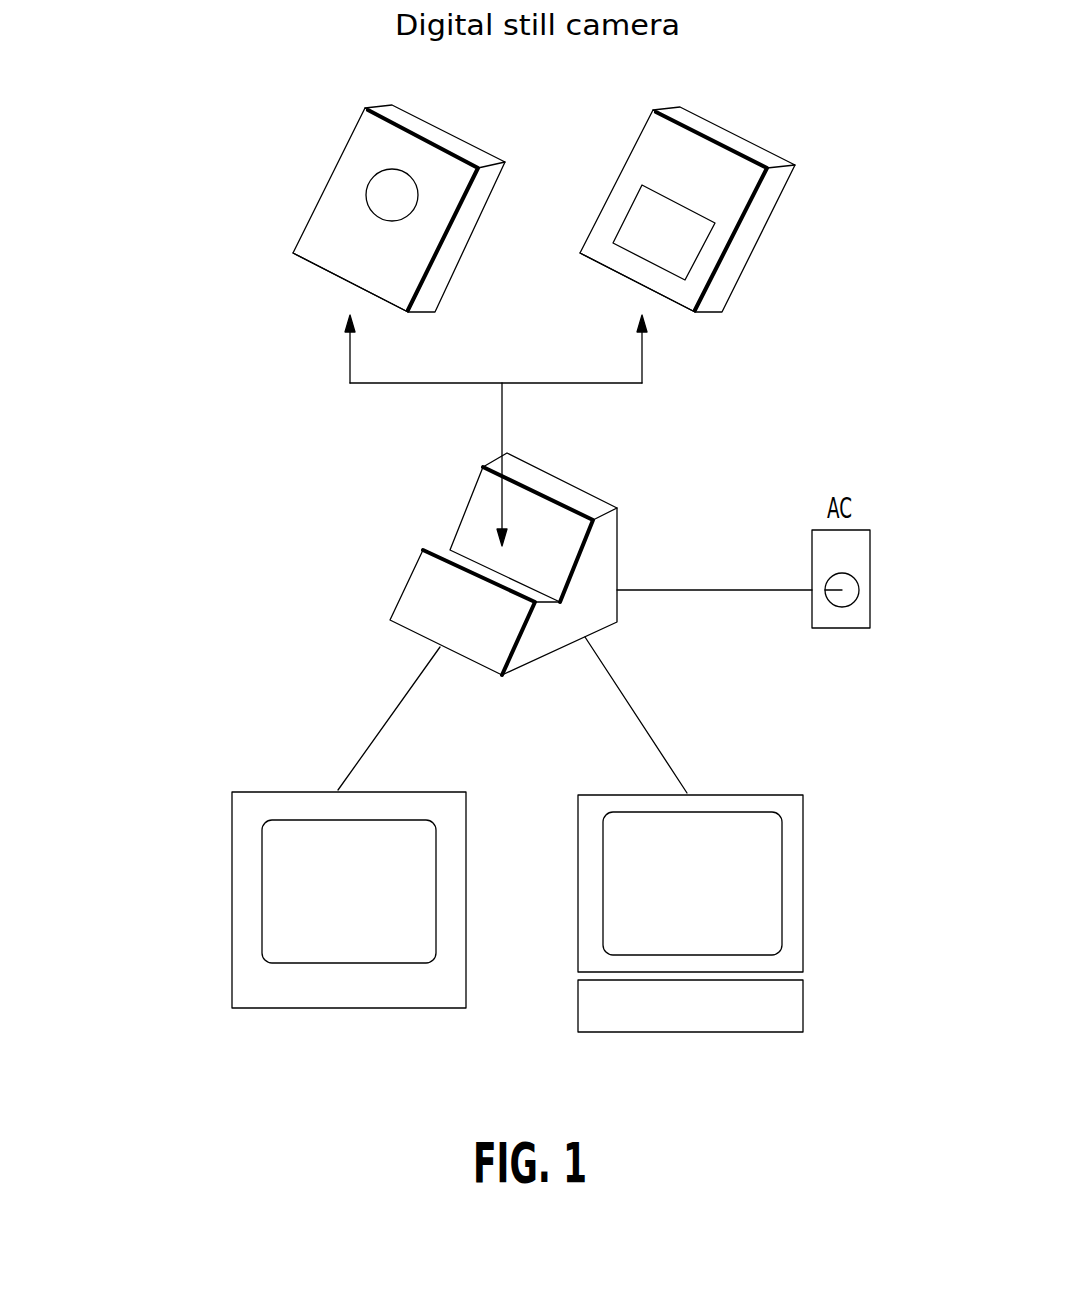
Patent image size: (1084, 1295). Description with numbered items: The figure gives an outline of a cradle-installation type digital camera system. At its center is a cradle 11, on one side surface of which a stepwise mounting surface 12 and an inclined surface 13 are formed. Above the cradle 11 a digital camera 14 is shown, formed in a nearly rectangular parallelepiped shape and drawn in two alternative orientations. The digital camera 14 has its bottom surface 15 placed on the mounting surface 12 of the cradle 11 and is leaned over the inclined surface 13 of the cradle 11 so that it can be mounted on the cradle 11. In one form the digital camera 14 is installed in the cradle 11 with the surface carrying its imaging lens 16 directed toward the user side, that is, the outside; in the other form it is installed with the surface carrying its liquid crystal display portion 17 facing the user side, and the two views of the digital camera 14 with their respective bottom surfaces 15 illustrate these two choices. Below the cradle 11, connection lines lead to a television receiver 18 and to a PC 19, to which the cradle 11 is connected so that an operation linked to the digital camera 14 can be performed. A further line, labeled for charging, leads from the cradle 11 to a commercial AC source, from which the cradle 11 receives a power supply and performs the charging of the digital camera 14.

The cradle 11 is at (586, 568).
The mounting surface 12 is at (542, 603).
The inclined surface 13 is at (570, 538).
The digital camera 14 is at (333, 175).
The bottom surface 15 is at (393, 310).
The imaging lens 16 is at (393, 218).
The liquid crystal display portion 17 is at (670, 205).
The television receiver 18 is at (232, 883).
The PC (Personal Computer) 19 is at (805, 877).